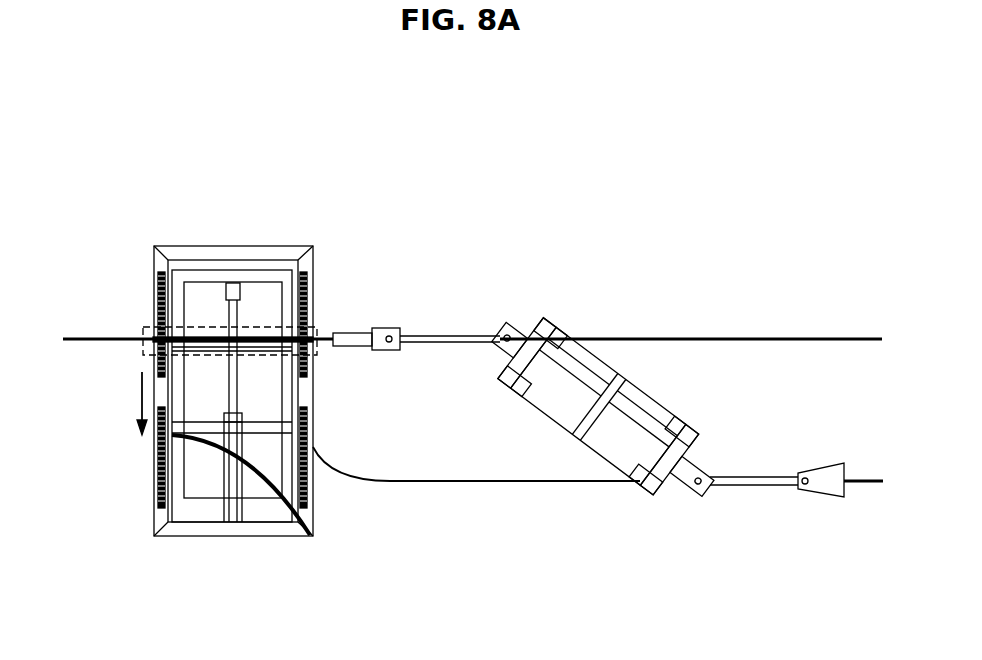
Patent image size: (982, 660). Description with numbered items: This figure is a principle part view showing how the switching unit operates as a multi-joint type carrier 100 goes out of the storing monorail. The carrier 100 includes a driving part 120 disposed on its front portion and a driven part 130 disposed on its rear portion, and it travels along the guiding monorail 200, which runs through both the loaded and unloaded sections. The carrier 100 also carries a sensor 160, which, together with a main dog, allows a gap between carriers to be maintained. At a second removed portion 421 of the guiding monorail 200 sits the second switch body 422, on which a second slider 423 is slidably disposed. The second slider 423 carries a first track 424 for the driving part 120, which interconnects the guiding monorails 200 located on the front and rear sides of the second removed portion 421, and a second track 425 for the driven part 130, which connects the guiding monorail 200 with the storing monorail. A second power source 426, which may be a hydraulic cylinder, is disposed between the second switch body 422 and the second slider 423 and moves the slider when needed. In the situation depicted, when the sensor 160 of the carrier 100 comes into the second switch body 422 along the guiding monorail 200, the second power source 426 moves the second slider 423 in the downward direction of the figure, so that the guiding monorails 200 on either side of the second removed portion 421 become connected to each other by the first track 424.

The multi-joint type carrier 100 is at (668, 407).
The driving part 120 is at (512, 326).
The driven part 130 is at (697, 492).
The sensor 160 is at (352, 333).
The guiding monorail 200 is at (72, 338).
The second removed portion 421 is at (142, 326).
The second switch body 422 is at (265, 247).
The second slider 423 is at (180, 443).
The first track 424 is at (200, 337).
The second track 425 is at (261, 498).
The second power source 426 is at (225, 481).